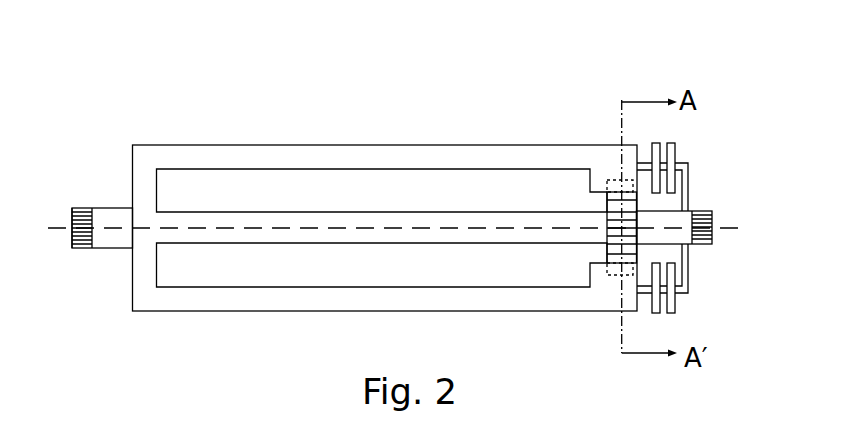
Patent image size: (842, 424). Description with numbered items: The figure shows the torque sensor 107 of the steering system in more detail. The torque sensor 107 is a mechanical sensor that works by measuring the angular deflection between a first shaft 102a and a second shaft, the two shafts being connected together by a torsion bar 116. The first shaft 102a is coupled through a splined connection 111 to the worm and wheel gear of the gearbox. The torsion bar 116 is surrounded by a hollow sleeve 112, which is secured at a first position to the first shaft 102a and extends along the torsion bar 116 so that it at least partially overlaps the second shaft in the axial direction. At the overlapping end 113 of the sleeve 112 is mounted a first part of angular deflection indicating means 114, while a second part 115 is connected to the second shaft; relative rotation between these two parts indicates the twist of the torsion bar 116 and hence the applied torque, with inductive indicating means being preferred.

The torque sensor 107 is at (641, 88).
The splined connection 111 is at (78, 249).
The hollow sleeve 112 is at (158, 152).
The overlapping end 113 is at (612, 154).
The first part of angular deflection indicating means 114 is at (657, 148).
The second part of angular deflection indicating means 115 is at (675, 150).
The torsion bar 116 is at (303, 213).
The first shaft 102a is at (707, 211).